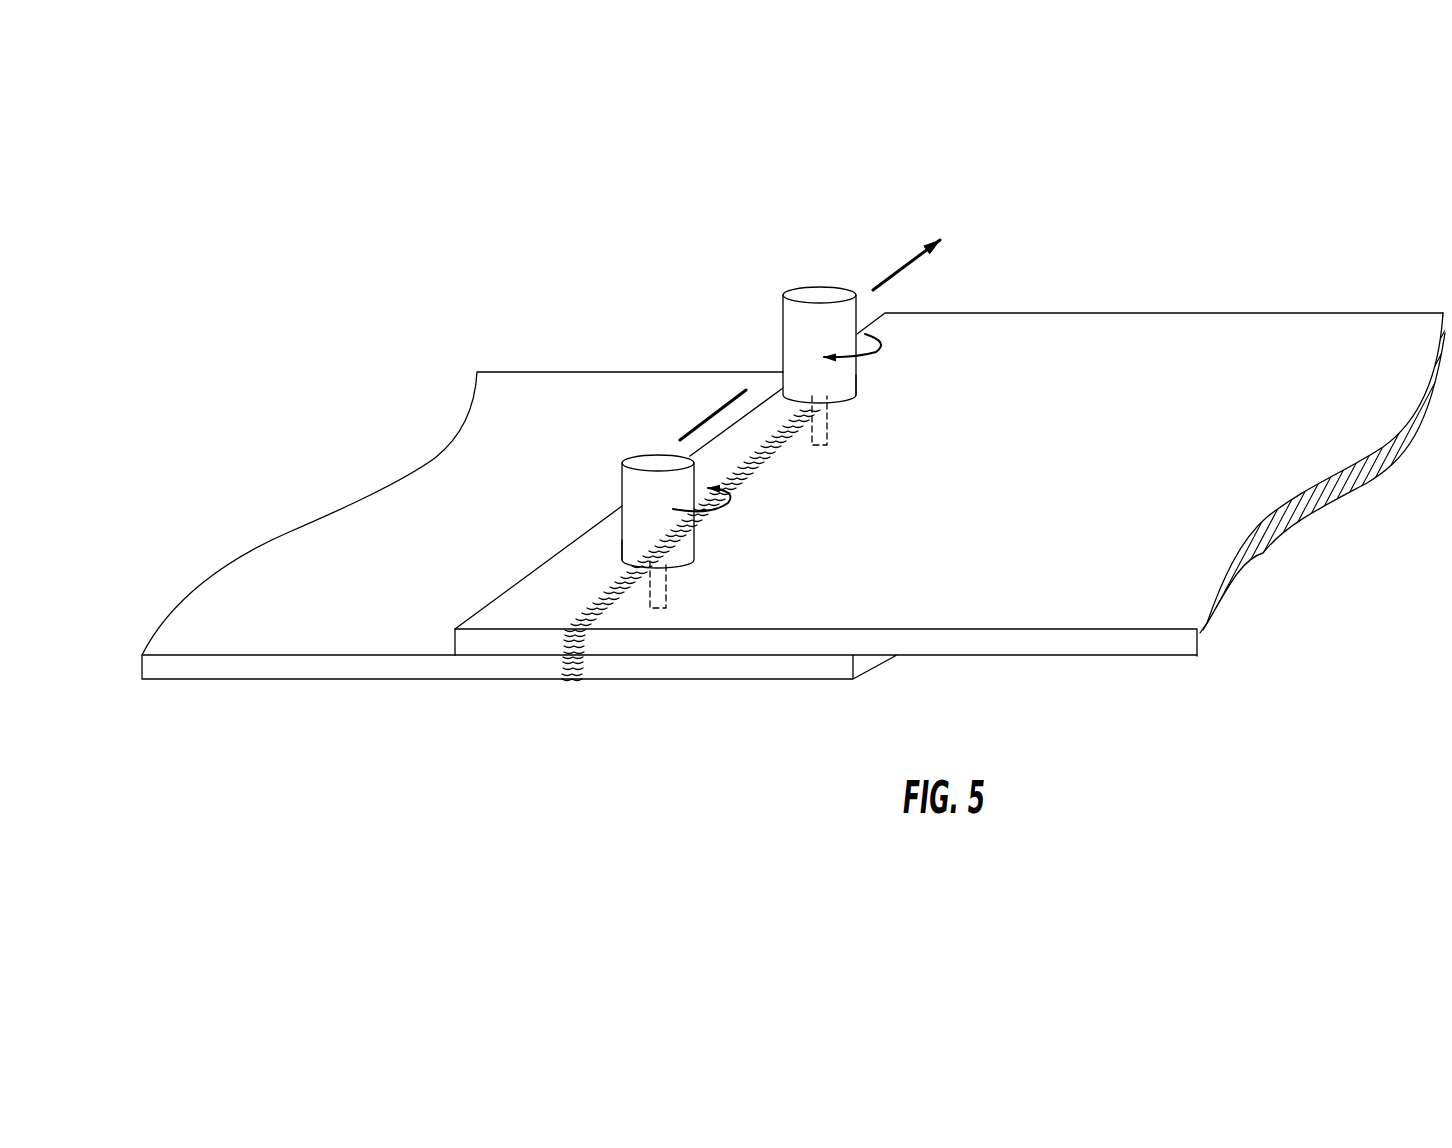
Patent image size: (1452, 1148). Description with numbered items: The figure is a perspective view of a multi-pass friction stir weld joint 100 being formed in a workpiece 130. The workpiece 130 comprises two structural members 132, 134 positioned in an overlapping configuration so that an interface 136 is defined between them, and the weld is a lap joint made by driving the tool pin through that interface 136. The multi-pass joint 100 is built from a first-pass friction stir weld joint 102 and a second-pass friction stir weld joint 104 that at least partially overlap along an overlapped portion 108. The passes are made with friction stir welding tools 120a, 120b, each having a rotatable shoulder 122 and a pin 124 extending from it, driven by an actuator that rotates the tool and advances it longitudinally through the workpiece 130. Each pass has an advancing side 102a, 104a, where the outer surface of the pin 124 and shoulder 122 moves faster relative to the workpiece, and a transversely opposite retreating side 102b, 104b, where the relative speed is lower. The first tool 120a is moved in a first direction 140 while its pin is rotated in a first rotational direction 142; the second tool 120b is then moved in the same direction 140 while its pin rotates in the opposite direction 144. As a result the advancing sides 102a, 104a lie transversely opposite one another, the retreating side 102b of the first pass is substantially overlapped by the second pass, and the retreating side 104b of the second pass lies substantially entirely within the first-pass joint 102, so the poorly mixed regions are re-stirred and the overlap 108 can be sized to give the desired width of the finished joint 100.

The multi-pass friction stir weld joint 100 is at (583, 772).
The first-pass friction stir weld joint 102 is at (753, 467).
The advancing side of first-pass weld joint 102a is at (781, 422).
The retreating side of first-pass weld joint 102b is at (796, 446).
The second-pass friction stir weld joint 104 is at (620, 608).
The advancing side of second-pass weld joint 104a is at (613, 679).
The retreating side of second-pass weld joint 104b is at (552, 667).
The overlapped portion 108 is at (620, 608).
The first friction stir welding tool 120a is at (800, 287).
The second friction stir welding tool 120b is at (622, 460).
The shoulder 122 is at (857, 397).
The pin 124 is at (660, 608).
The workpiece 130 is at (285, 535).
The structural member 132 is at (1076, 657).
The structural member 134 is at (192, 679).
The interface 136 is at (457, 655).
The first direction 140 is at (707, 419).
The first rotational direction 142 is at (878, 352).
The opposite rotational direction 144 is at (722, 500).